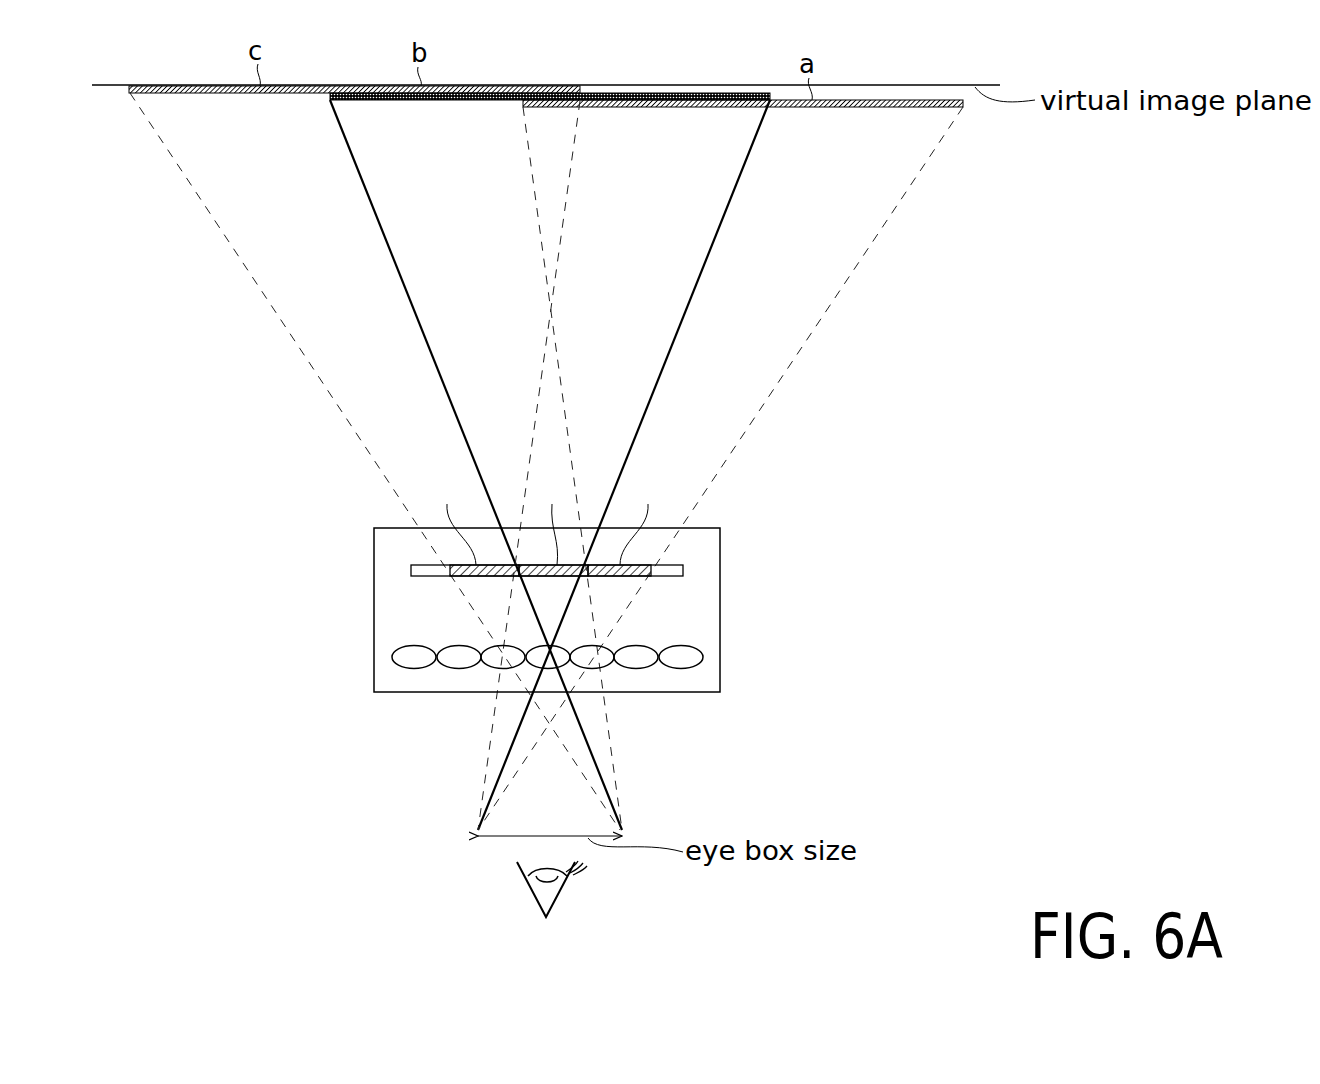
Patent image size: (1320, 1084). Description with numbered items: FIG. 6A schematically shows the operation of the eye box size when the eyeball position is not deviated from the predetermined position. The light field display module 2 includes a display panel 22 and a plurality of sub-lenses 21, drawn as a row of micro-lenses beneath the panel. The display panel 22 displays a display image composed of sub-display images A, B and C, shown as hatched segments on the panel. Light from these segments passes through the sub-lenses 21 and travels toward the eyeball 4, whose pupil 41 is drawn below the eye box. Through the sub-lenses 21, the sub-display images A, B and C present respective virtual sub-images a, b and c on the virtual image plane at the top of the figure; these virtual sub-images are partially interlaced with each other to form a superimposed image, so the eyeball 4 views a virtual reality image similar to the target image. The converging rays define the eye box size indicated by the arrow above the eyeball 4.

The light field display module 2 is at (722, 610).
The sub-lenses 21 is at (703, 655).
The display panel 22 is at (685, 567).
The eyeball 4 is at (556, 903).
The pupil 41 is at (545, 873).